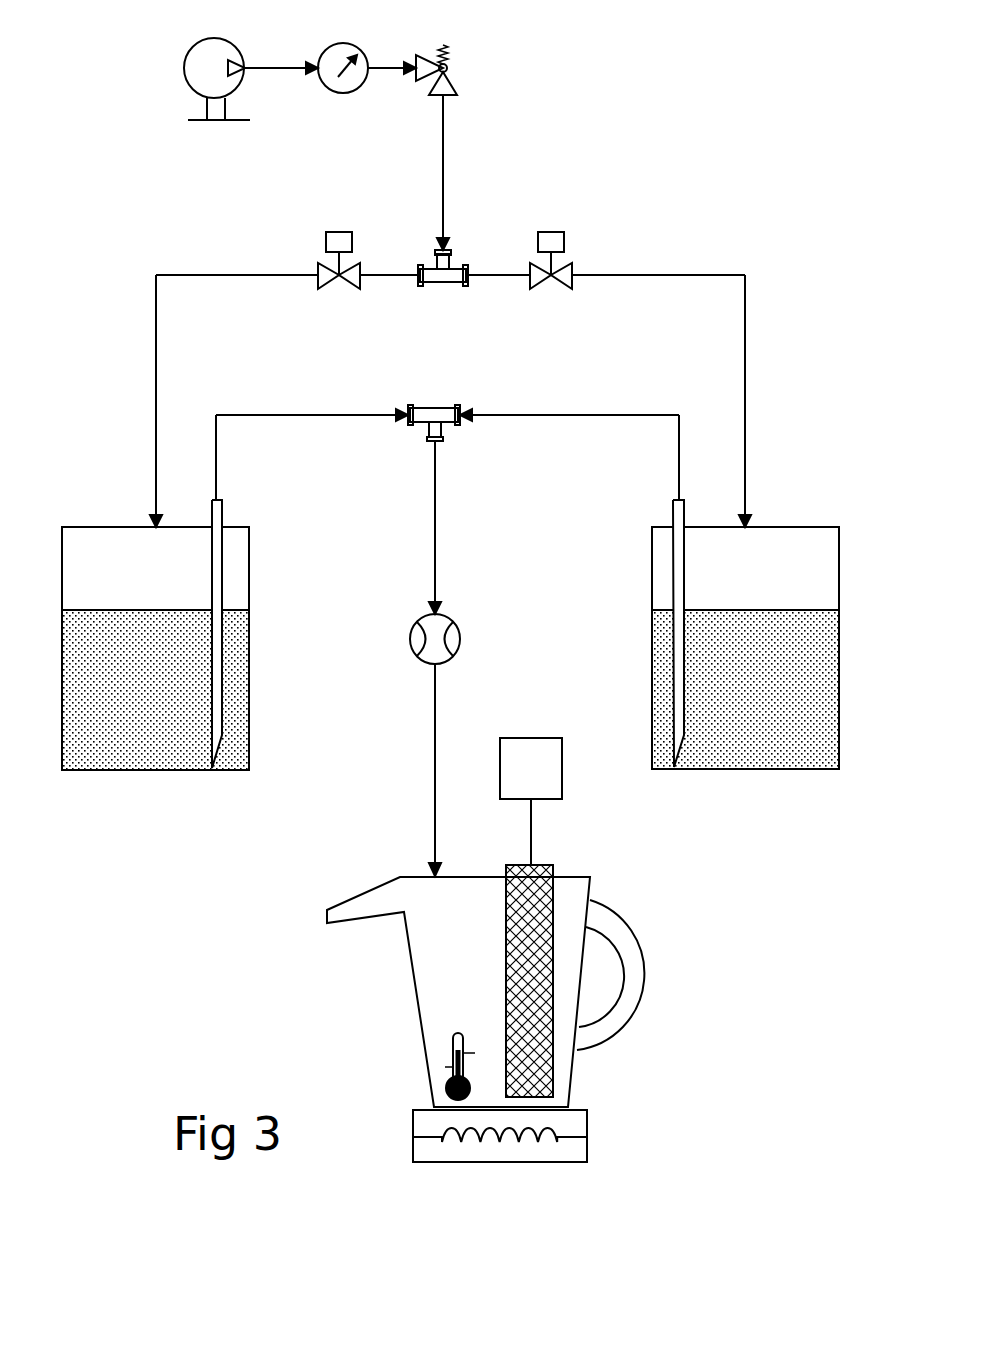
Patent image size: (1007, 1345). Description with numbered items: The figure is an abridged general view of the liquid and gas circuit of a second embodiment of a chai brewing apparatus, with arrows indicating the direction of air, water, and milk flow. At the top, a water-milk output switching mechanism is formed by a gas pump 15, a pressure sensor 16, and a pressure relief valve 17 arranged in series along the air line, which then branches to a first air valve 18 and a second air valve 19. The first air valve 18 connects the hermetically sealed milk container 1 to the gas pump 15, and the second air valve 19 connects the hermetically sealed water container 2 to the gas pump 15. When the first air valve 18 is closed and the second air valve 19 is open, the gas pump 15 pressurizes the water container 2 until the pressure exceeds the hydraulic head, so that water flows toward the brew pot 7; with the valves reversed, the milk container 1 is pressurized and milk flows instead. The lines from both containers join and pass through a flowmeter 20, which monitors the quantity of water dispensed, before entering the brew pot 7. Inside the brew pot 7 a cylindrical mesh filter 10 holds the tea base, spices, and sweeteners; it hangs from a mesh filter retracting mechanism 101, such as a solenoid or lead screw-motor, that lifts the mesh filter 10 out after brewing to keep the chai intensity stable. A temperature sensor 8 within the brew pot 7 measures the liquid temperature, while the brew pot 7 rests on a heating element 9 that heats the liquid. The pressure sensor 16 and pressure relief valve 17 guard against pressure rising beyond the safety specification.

The milk container 1 is at (250, 556).
The water container 2 is at (645, 558).
The brew pot 7 is at (593, 900).
The temperature sensor 8 is at (452, 1040).
The heating element 9 is at (587, 1141).
The mesh filter 10 is at (555, 877).
The gas pump 15 is at (194, 90).
The pressure sensor 16 is at (343, 93).
The pressure relief valve 17 is at (460, 95).
The first air valve 18 is at (347, 282).
The second air valve 19 is at (570, 263).
The flowmeter 20 is at (410, 639).
The mesh filter retracting mechanism 101 is at (540, 735).